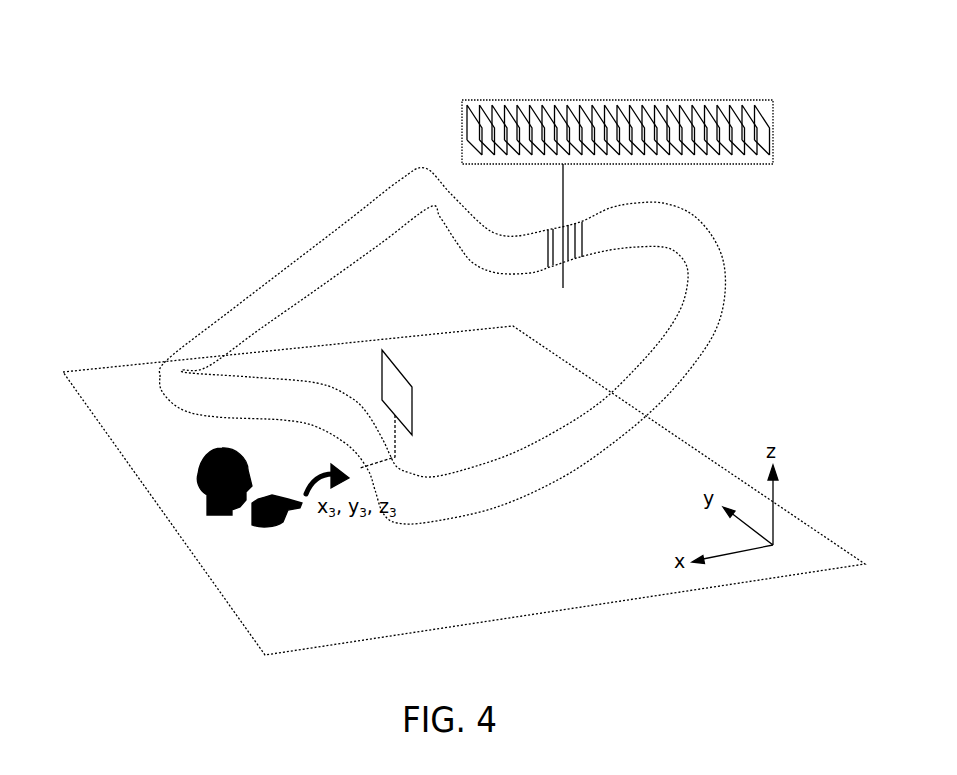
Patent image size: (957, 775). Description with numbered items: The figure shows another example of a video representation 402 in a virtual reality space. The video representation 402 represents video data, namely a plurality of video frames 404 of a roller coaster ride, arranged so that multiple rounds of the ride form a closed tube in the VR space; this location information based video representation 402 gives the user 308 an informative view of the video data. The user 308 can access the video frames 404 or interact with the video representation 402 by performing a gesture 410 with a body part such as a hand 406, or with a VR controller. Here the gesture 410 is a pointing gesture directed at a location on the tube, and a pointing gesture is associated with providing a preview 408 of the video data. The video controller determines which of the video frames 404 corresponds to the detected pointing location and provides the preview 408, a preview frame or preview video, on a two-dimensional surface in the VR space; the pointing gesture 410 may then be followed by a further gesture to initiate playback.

The user 308 is at (198, 478).
The video representation 402 is at (263, 283).
The plurality of video frames 404 is at (520, 100).
The hand 406 is at (283, 528).
The preview 408 is at (397, 366).
The pointing gesture 410 is at (305, 494).